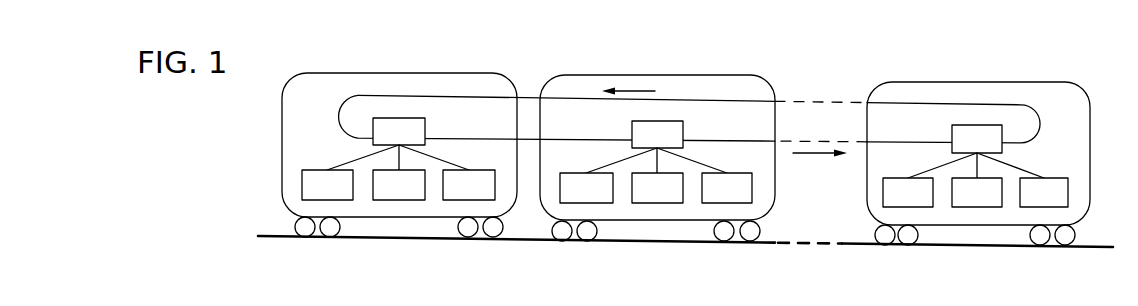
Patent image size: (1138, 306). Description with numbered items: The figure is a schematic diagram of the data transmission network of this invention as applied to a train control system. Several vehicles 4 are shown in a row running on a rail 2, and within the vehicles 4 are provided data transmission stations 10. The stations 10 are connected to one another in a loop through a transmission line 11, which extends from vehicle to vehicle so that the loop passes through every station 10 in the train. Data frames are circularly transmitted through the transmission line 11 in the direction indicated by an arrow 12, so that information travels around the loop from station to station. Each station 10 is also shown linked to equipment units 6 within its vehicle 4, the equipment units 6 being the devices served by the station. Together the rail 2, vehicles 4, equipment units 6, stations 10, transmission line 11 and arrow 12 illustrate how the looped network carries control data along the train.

The rail 2 is at (443, 241).
The vehicles 4 is at (448, 74).
The equipment unit 6 is at (373, 170).
The data transmission stations 10 is at (432, 111).
The transmission line 11 is at (478, 98).
The arrow 12 is at (635, 91).